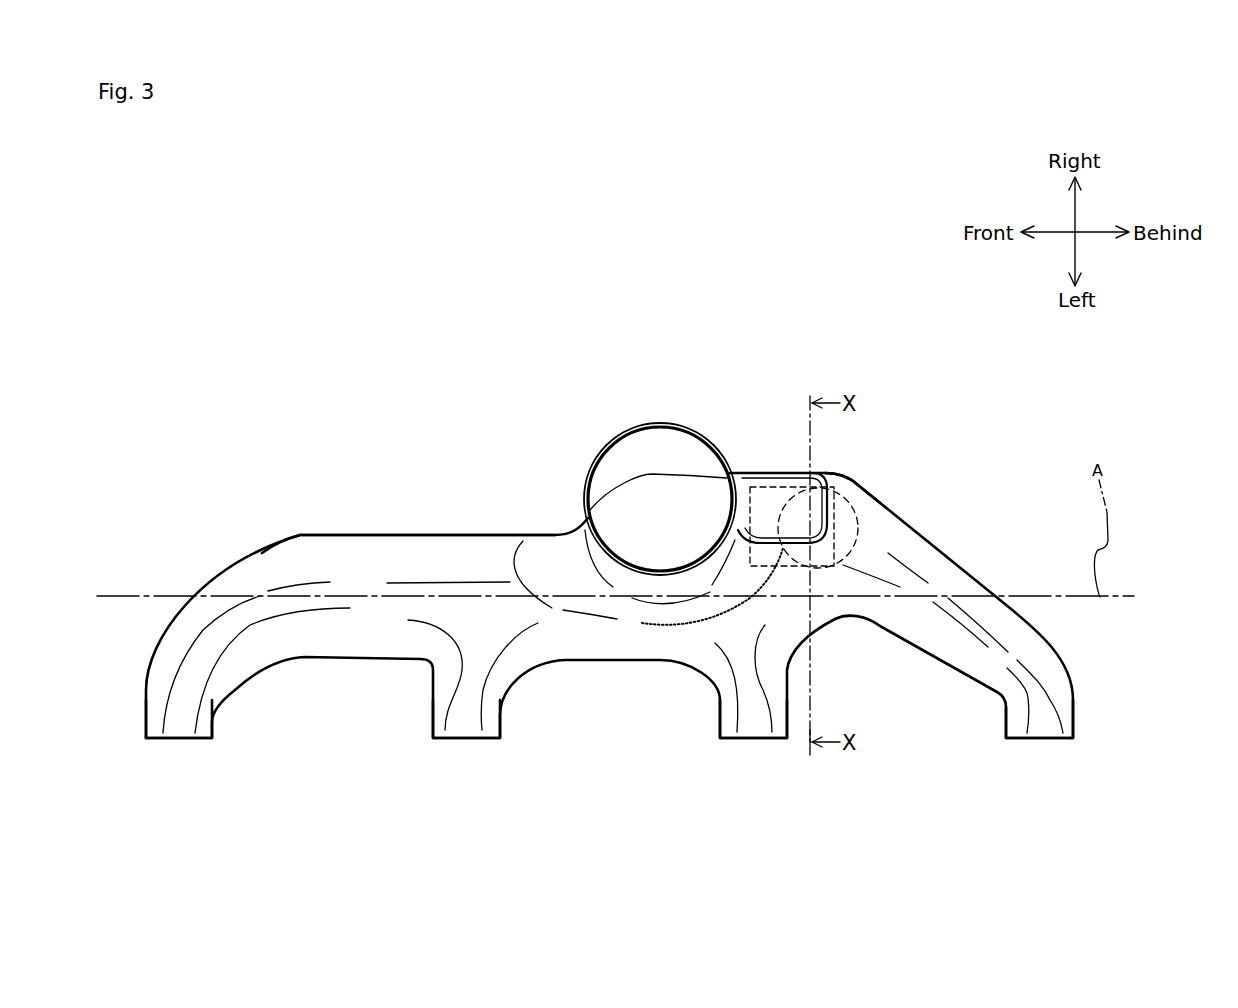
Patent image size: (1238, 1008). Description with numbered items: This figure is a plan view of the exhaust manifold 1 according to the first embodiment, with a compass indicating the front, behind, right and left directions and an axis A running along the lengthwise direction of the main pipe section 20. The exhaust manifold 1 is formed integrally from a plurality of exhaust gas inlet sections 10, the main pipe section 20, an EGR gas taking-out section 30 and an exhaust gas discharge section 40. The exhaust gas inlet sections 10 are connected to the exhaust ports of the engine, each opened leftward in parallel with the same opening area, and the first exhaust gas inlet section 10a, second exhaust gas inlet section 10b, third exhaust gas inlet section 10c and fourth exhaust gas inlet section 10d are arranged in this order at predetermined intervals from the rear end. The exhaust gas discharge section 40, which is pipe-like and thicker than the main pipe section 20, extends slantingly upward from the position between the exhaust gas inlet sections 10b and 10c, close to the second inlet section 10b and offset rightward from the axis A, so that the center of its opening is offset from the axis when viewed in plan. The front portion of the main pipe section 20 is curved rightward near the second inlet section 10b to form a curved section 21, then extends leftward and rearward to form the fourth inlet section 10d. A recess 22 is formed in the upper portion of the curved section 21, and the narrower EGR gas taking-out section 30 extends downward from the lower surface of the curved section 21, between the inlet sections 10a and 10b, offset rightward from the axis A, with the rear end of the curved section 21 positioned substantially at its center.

The exhaust manifold 1 is at (479, 341).
The exhaust gas inlet sections 10 is at (1084, 753).
The first exhaust gas inlet section 10a is at (1075, 706).
The second exhaust gas inlet section 10b is at (722, 727).
The third exhaust gas inlet section 10c is at (502, 731).
The fourth exhaust gas inlet section 10d is at (214, 728).
The main pipe section 20 is at (396, 503).
The curved section 21 is at (855, 472).
The recess 22 is at (776, 500).
The EGR gas taking-out section 30 is at (858, 512).
The exhaust gas discharge section 40 is at (607, 440).